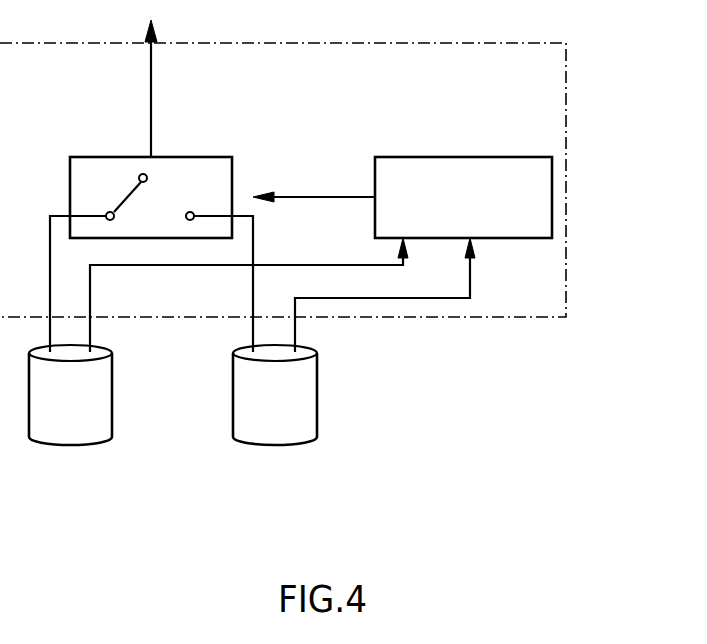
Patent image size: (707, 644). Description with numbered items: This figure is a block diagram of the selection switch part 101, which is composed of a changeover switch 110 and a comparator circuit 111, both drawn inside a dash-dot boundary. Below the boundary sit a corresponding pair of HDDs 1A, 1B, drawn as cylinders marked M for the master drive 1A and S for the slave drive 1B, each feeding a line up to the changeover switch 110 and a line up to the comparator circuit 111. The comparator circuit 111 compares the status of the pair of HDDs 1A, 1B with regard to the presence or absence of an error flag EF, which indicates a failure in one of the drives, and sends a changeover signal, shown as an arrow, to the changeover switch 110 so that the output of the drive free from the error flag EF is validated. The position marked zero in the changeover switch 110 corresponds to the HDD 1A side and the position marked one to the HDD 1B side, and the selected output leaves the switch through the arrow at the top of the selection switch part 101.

The selection switch part 101 is at (565, 87).
The changeover switch 110 is at (200, 157).
The comparator circuit 111 is at (500, 157).
The error flag EF is at (405, 263).
The HDD (master) 1A is at (70, 447).
The HDD (slave) 1B is at (275, 447).